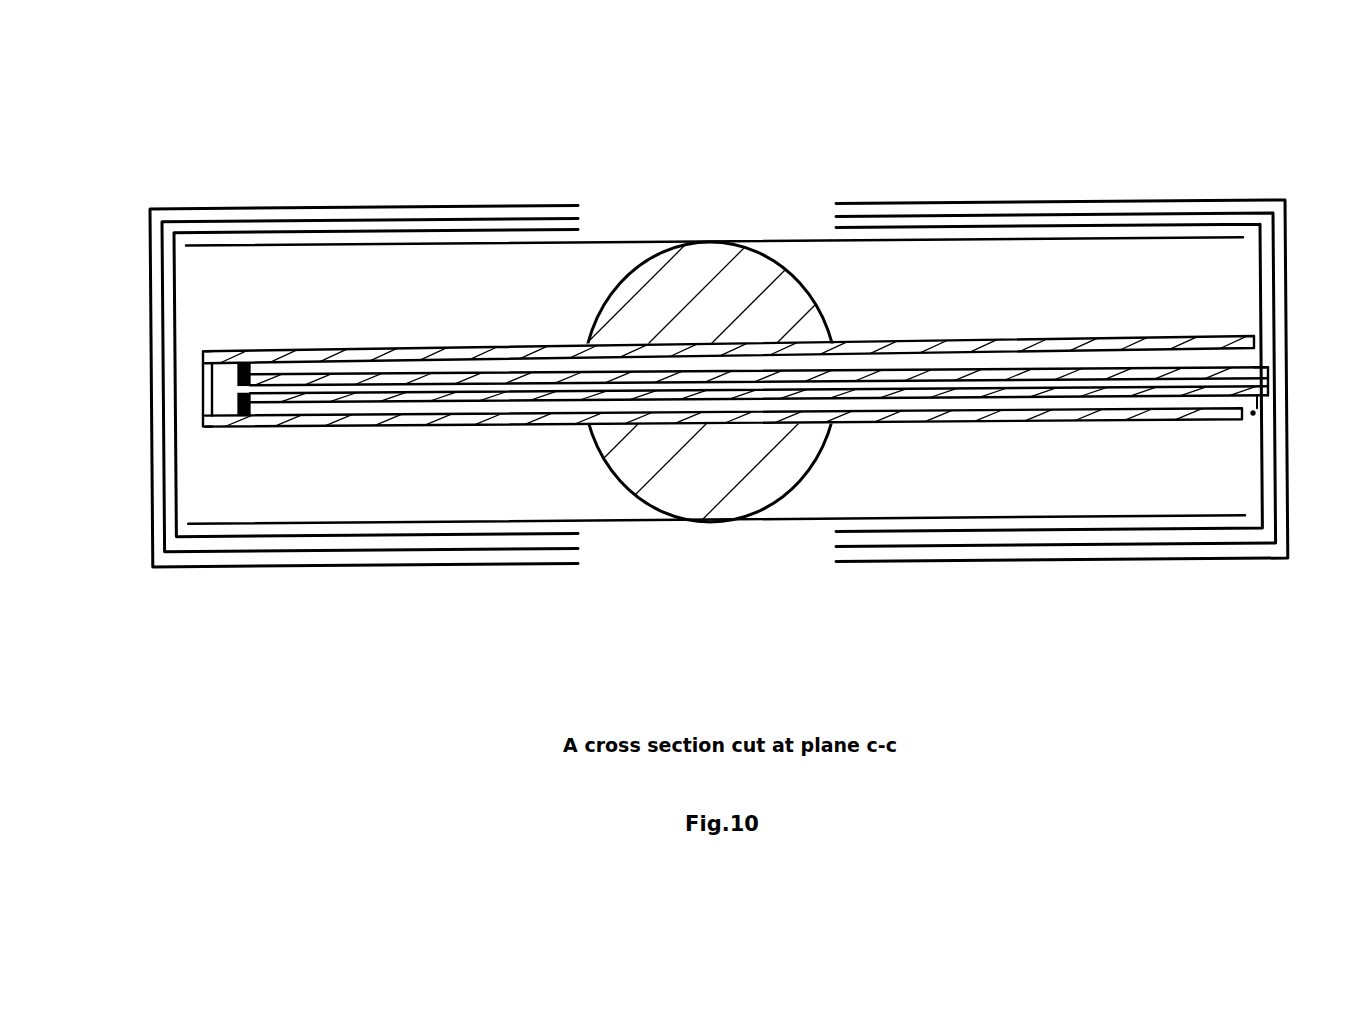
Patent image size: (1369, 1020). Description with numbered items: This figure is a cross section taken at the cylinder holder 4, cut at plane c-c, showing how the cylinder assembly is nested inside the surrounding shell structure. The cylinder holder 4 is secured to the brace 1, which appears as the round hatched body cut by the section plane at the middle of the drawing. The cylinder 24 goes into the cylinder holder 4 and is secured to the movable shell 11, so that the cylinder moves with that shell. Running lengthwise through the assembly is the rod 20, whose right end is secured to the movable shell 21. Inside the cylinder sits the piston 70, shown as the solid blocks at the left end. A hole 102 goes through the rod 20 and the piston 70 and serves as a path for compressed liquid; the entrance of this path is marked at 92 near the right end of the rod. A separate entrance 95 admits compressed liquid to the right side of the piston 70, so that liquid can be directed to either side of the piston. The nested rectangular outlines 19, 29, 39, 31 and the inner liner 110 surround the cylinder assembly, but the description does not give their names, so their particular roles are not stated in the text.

The brace 1 is at (752, 442).
The cylinder holder 4 is at (1047, 337).
The movable shell 11 is at (862, 529).
The inner shell 19 is at (440, 232).
The rod 20 is at (1153, 378).
The movable shell 21 is at (988, 215).
The cylinder 24 is at (1015, 410).
The middle shell 29 is at (350, 221).
The outer housing wall 31 is at (1163, 202).
The outer shell 39 is at (245, 208).
The piston 70 is at (238, 405).
The entrance of the path 92 is at (1272, 382).
The entrance for compressed liquid 95 is at (1252, 418).
The hole 102 is at (340, 393).
The inner liner 110 is at (597, 521).